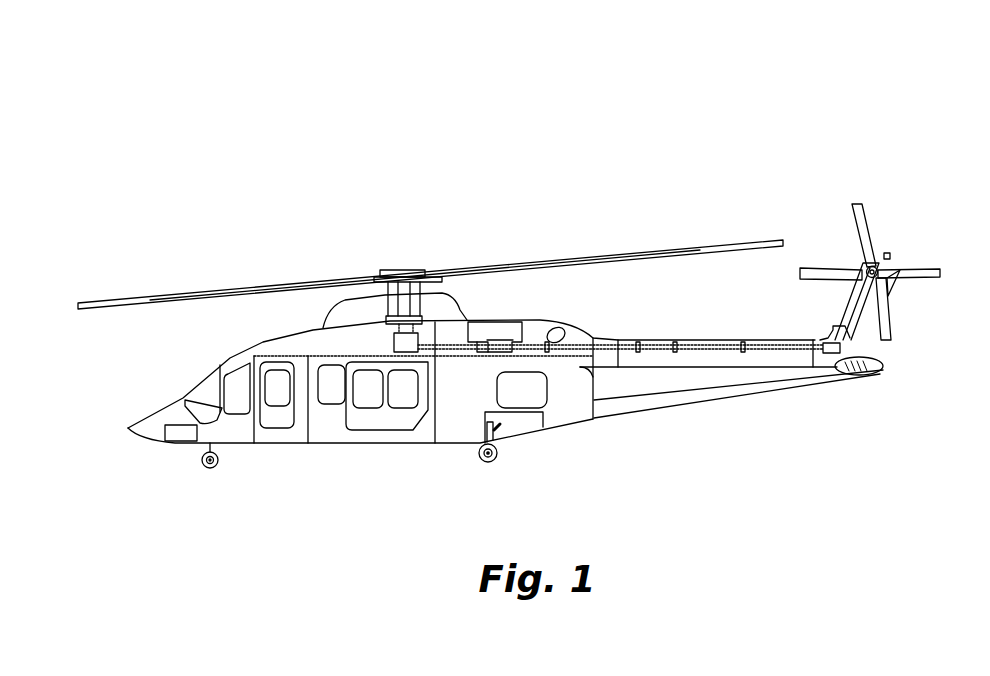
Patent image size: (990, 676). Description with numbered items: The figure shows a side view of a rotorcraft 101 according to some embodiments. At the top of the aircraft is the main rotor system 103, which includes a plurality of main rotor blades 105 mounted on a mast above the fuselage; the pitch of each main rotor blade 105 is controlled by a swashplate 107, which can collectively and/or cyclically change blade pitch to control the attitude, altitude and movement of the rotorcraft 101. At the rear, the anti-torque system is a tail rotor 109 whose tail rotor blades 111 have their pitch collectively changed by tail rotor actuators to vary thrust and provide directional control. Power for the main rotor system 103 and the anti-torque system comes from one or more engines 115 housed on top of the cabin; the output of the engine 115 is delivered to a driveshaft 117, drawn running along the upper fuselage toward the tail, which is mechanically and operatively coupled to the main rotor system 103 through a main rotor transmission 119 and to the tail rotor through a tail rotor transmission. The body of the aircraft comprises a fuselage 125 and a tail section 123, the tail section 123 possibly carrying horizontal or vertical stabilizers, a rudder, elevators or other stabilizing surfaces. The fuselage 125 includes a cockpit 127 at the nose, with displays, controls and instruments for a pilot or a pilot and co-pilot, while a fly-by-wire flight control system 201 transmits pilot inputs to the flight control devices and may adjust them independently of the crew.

The rotorcraft 101 is at (187, 48).
The main rotor system 103 is at (414, 262).
The main rotor blades 105 is at (665, 250).
The swashplate 107 is at (421, 318).
The tail rotor 109 is at (878, 184).
The tail rotor blade 111 is at (931, 265).
The engines 115 is at (509, 322).
The driveshaft 117 is at (445, 349).
The main rotor transmission 119 is at (393, 344).
The tail section 123 is at (717, 400).
The fuselage 125 is at (350, 444).
The cockpit 127 is at (186, 388).
The fly-by-wire flight control system 201 is at (165, 434).